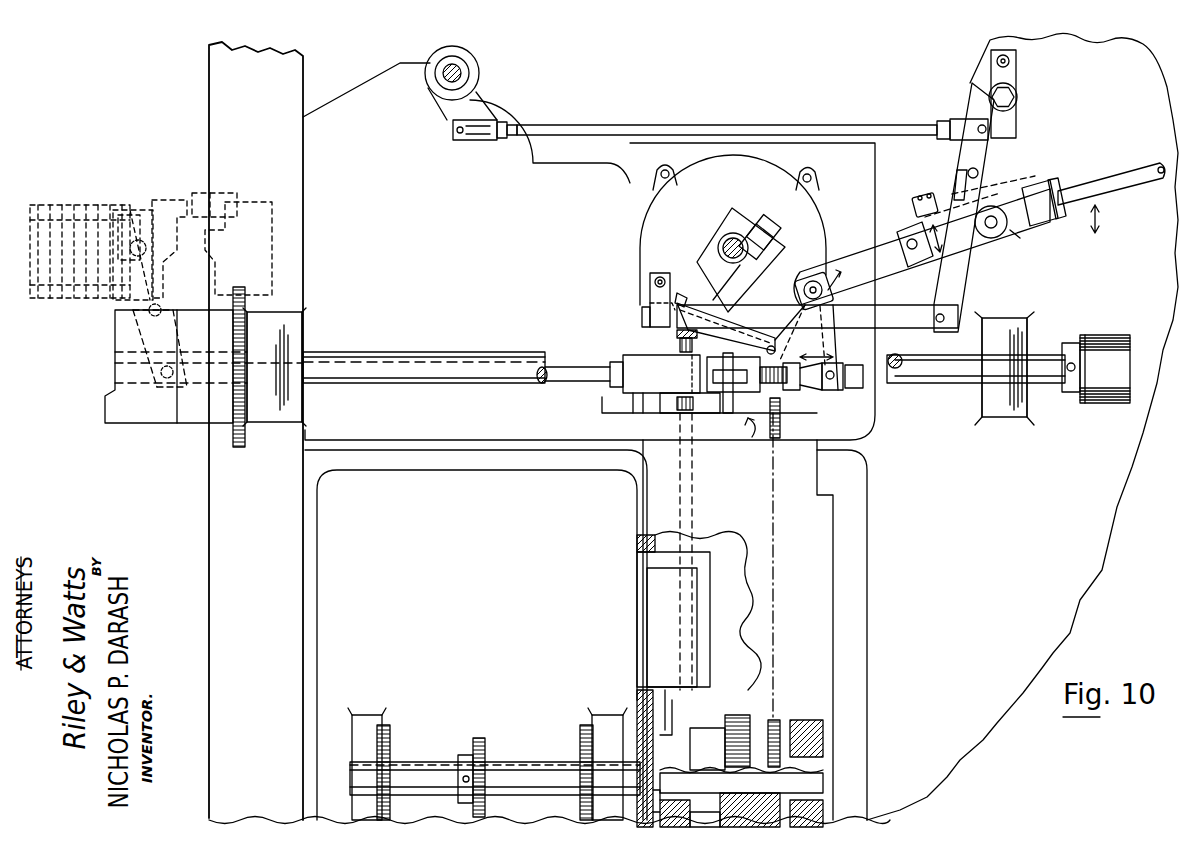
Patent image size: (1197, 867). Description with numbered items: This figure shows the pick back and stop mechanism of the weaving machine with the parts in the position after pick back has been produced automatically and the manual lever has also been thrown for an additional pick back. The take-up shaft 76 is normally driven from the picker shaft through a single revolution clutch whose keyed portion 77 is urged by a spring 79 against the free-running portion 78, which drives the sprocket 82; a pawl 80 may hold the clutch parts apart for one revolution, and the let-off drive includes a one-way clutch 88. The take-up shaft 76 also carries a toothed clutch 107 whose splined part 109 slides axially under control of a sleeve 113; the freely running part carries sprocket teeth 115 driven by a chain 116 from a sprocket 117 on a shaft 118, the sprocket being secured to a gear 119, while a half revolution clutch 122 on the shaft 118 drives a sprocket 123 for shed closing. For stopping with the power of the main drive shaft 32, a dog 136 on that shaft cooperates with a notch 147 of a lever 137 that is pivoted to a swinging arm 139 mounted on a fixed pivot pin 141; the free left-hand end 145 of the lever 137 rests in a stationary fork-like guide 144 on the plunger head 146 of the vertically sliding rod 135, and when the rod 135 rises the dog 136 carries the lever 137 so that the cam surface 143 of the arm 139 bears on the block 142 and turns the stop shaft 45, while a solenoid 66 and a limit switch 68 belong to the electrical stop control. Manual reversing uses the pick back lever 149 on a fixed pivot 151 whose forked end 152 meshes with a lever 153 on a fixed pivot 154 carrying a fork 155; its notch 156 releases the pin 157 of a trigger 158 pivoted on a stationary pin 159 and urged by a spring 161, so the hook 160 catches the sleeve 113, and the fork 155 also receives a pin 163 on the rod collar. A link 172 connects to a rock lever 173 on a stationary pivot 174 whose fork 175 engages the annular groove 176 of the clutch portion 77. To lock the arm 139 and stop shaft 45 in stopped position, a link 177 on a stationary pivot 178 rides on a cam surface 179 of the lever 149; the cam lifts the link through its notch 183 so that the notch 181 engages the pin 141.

The main drive shaft 32 is at (766, 227).
The stop shaft 45 is at (1018, 94).
The solenoid 66 is at (706, 638).
The limit switch 68 is at (914, 198).
The take-up shaft 76 is at (446, 358).
The clutch portion 77 is at (168, 215).
The clutch portion 78 is at (252, 207).
The spring 79 is at (98, 200).
The pawl 80 is at (220, 195).
The sprocket 82 is at (246, 437).
The one-way clutch 88 is at (166, 420).
The toothed clutch 107 is at (755, 437).
The clutch part 109 is at (735, 422).
The sleeve 113 is at (788, 390).
The sprocket teeth 115 is at (781, 437).
The chain 116 is at (775, 580).
The sprocket 117 is at (780, 732).
The shaft 118 is at (538, 760).
The gear 119 is at (740, 707).
The half revolution clutch 122 is at (716, 723).
The sprocket 123 is at (490, 722).
The rod 135 is at (690, 503).
The dog 136 is at (712, 245).
The lever 137 is at (894, 316).
The swinging arm 139 is at (956, 278).
The fixed pivot pin 141 is at (982, 170).
The block 142 is at (1015, 126).
The cam surface 143 is at (982, 118).
The fork-like guide 144 is at (648, 275).
The left-hand end 145 is at (642, 318).
The plunger head 146 is at (677, 342).
The notch 147 is at (746, 296).
The pick back lever 149 is at (1160, 168).
The fixed pivot 151 is at (986, 240).
The forked end 152 is at (903, 228).
The lever 153 is at (870, 250).
The fixed pivot 154 is at (815, 275).
The fork 155 is at (838, 345).
The notch 156 is at (818, 340).
The pin 157 is at (790, 330).
The trigger 158 is at (760, 330).
The stationary pin 159 is at (703, 300).
The hook 160 is at (767, 349).
The spring 161 is at (650, 303).
The pin 163 is at (836, 392).
The link 172 is at (589, 367).
The rock lever 173 is at (122, 345).
The stationary pivot 174 is at (118, 318).
The fork 175 is at (135, 205).
The annular groove 176 is at (148, 207).
The link 177 is at (1034, 186).
The stationary pivot 178 is at (1044, 190).
The cam surface 179 is at (1016, 233).
The notch 181 is at (960, 170).
The notch 183 is at (955, 196).